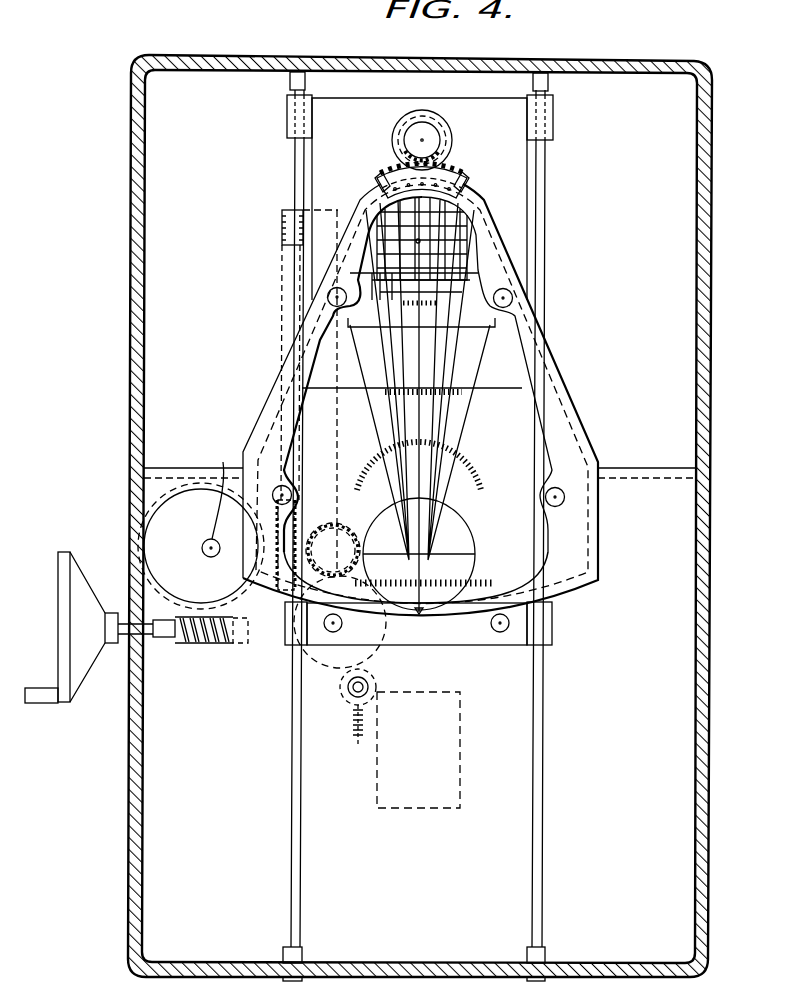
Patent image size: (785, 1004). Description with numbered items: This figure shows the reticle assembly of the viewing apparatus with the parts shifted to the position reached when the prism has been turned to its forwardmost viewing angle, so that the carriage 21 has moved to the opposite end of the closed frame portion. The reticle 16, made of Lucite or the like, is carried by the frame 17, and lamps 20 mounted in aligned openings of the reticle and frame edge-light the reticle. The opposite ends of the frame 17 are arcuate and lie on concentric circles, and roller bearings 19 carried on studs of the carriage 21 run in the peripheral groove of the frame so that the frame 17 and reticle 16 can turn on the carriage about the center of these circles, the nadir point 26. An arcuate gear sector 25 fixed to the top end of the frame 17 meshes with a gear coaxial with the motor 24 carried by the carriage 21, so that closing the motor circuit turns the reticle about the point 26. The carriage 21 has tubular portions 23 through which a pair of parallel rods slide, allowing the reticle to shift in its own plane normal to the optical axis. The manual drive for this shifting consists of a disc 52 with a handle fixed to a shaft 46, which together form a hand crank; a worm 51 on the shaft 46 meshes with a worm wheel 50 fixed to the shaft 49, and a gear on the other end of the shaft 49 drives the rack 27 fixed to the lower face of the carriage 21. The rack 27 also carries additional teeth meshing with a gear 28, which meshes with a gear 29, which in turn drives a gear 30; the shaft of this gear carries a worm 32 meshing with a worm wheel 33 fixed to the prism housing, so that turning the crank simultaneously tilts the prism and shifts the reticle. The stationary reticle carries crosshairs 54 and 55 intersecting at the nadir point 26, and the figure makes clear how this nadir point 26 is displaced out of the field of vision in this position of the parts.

The reticle 16 is at (518, 376).
The frame 17 is at (577, 433).
The roller bearings 19 is at (382, 181).
The lamps 20 is at (508, 297).
The carriage 21 is at (508, 646).
The tubular portions 23 is at (289, 108).
The motor 24 is at (423, 138).
The arcuate gear sector 25 is at (454, 173).
The nadir point 26 is at (420, 241).
The rack 27 is at (292, 223).
The gear 28 is at (312, 560).
The gear 29 is at (330, 656).
The gear 30 is at (347, 698).
The worm 32 is at (377, 682).
The worm wheel 33 is at (355, 702).
The shaft 46 is at (124, 636).
The shaft 49 is at (222, 466).
The worm wheel 50 is at (170, 518).
The worm 51 is at (167, 640).
The disc 52 is at (64, 702).
The crosshair 54 is at (455, 554).
The crosshair 55 is at (422, 610).